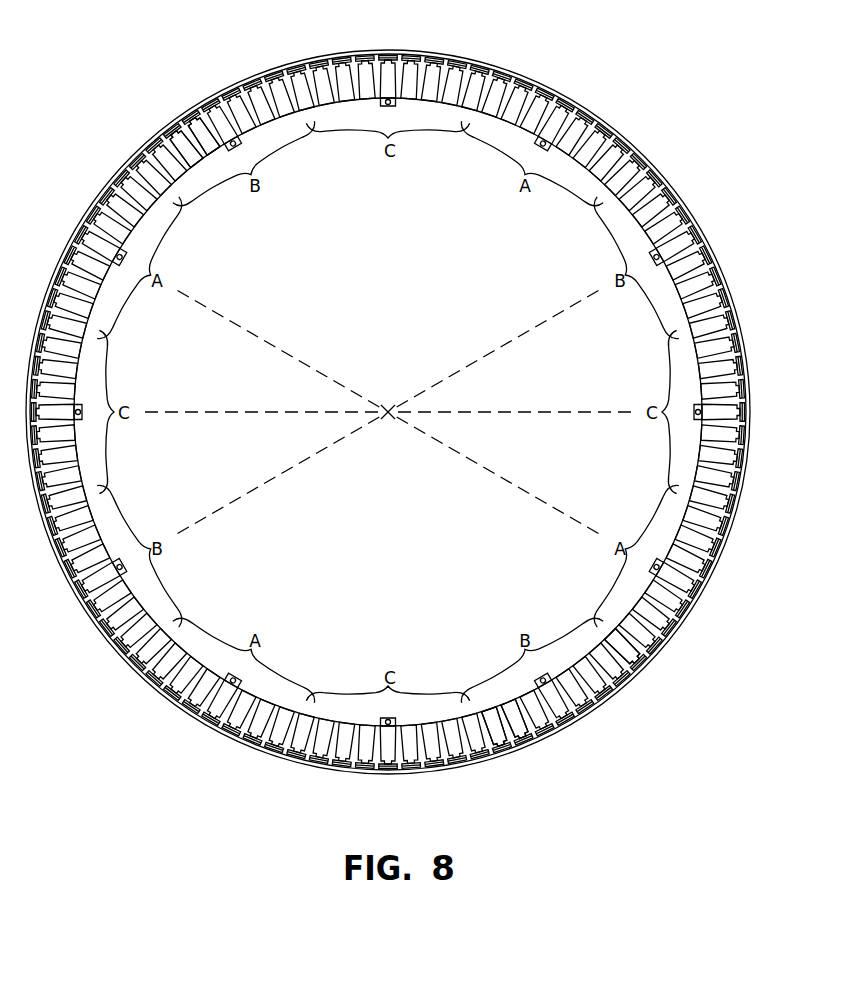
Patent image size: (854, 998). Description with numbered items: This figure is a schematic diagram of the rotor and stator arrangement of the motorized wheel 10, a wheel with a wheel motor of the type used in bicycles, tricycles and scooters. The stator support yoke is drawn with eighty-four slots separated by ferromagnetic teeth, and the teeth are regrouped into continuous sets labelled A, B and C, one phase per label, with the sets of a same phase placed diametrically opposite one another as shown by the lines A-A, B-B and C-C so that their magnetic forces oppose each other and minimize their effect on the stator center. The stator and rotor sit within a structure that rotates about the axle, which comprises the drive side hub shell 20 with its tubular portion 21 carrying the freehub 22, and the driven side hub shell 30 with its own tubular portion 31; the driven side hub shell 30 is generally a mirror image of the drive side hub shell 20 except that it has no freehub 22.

The motorized wheel 10 is at (619, 64).
The drive side hub shell 20 is at (388, 412).
The tubular portion 21 is at (222, 104).
The freehub 22 is at (108, 190).
The driven side hub shell 30 is at (641, 134).
The tubular portion 31 is at (663, 190).